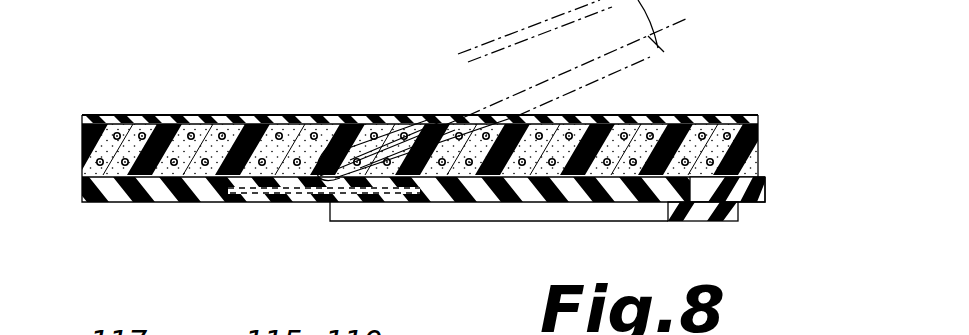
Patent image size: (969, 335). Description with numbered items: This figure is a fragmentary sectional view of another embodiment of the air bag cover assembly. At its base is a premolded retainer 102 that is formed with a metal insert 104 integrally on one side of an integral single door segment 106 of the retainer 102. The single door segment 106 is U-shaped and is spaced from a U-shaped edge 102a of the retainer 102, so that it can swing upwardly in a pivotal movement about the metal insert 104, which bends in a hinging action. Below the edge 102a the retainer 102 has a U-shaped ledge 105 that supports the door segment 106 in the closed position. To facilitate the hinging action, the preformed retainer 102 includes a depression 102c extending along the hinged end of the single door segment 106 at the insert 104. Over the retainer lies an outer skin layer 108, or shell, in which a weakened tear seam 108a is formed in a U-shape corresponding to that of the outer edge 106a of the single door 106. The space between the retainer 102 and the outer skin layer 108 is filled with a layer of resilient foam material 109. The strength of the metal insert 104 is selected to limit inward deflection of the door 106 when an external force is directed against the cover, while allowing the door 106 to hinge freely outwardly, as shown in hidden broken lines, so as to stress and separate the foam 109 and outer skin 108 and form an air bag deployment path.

The retainer 102 is at (451, 133).
The U-shaped edge 102a is at (712, 181).
The depression 102c is at (315, 180).
The metal insert 104 is at (410, 193).
The U-shaped ledge 105 is at (703, 217).
The single door segment 106 is at (607, 188).
The outer edge of the single door 106a is at (702, 216).
The outer skin layer 108 is at (250, 117).
The weakened tear seam 108a is at (750, 116).
The layer of resilient foam material 109 is at (155, 126).